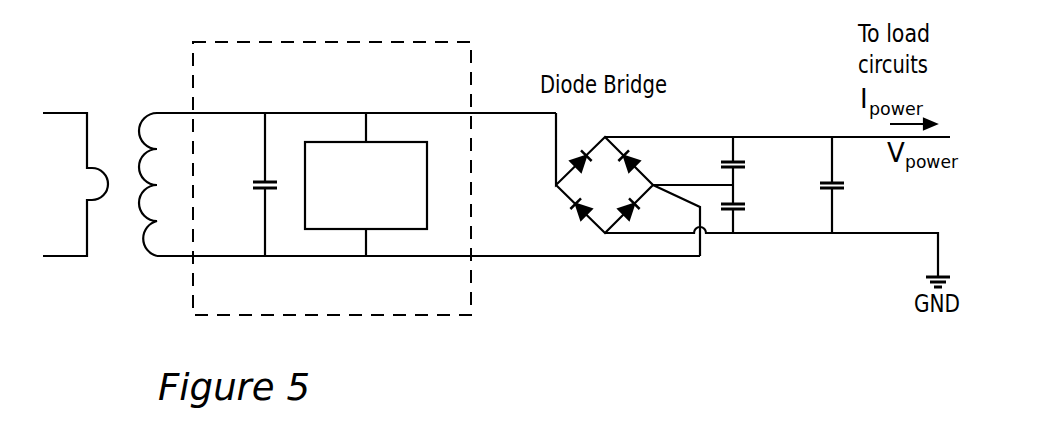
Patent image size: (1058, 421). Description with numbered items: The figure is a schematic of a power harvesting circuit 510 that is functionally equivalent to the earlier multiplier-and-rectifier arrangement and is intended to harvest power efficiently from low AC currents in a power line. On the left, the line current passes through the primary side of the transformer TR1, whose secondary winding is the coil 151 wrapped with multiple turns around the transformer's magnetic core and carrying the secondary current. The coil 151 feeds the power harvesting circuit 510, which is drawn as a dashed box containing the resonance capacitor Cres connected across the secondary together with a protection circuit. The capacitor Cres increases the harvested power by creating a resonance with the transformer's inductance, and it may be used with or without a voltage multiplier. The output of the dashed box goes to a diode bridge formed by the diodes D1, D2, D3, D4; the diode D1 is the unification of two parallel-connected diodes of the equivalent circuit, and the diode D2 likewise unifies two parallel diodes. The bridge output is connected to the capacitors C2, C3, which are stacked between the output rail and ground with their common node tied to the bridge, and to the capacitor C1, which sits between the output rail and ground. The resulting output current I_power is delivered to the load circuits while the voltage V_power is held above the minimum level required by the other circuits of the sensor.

The coil 151 is at (140, 245).
The power harvesting circuit 510 is at (483, 36).
The transformer TR1 is at (114, 198).
The resonance capacitor Cres is at (246, 184).
The diode D1 is at (583, 143).
The diode D2 is at (572, 223).
The diode D3 is at (646, 155).
The diode D4 is at (646, 213).
The capacitor C1 is at (847, 185).
The capacitor C2 is at (749, 161).
The capacitor C3 is at (749, 209).